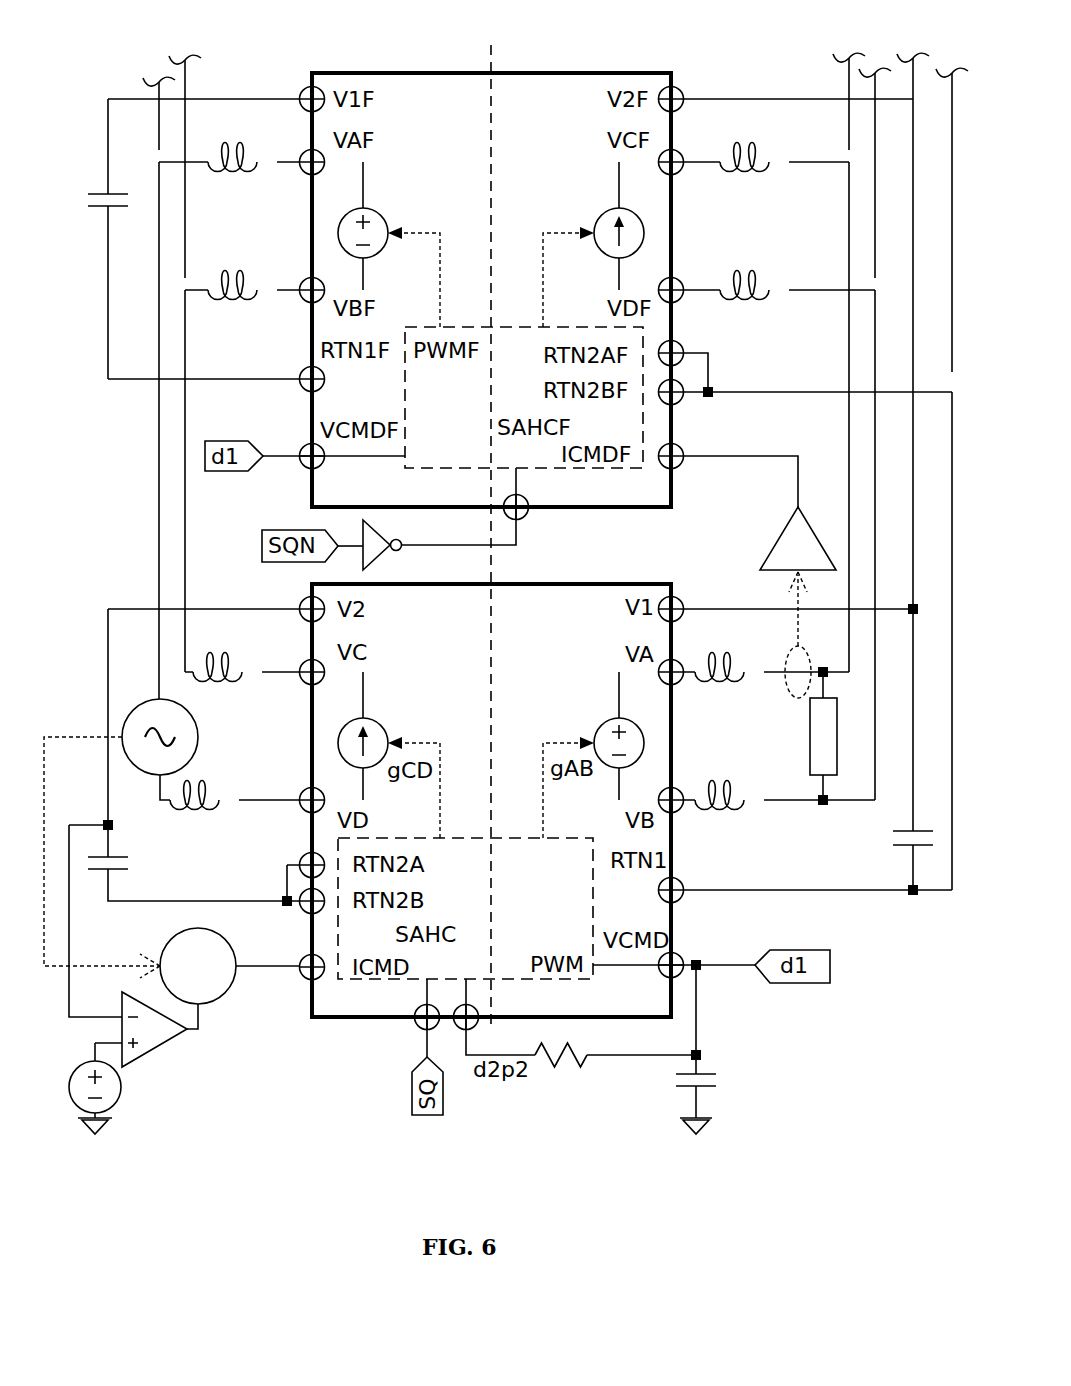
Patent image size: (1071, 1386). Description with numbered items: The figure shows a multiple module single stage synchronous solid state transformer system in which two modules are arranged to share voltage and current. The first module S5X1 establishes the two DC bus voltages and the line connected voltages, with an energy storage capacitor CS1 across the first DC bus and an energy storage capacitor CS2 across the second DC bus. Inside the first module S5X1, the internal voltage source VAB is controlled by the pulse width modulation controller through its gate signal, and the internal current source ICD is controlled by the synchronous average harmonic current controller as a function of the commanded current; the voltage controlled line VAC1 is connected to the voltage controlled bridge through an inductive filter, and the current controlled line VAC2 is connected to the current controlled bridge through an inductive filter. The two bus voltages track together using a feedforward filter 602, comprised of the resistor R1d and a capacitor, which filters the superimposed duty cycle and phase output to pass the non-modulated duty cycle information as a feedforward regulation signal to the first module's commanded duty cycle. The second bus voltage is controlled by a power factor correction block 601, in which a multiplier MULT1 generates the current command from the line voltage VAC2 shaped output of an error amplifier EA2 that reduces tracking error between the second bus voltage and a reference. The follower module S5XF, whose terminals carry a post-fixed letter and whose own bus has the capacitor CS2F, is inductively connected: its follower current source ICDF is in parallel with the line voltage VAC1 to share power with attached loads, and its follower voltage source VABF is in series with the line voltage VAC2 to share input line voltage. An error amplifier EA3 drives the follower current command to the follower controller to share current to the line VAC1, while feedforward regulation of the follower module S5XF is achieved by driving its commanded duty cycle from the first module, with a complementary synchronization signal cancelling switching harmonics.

The power factor correction block 601 is at (145, 1115).
The feedforward filter 602 is at (730, 1049).
The follower module S5XF is at (491, 290).
The first module S5X1 is at (491, 800).
The error amplifier EA3 is at (788, 568).
The error amplifier EA2 is at (169, 1029).
The multiplier MULT1 is at (159, 961).
The voltage controlled line VAC1 is at (789, 736).
The current controlled line VAC2 is at (159, 704).
The energy storage capacitor CS1 is at (885, 845).
The energy storage capacitor CS2 is at (129, 847).
The follower energy storage capacitor CS2F is at (112, 237).
The resistor R1d is at (563, 1071).
The internal current source ICD is at (387, 734).
The internal voltage source VAB is at (588, 735).
The follower current source ICDF is at (582, 223).
The follower voltage source VABF is at (389, 223).